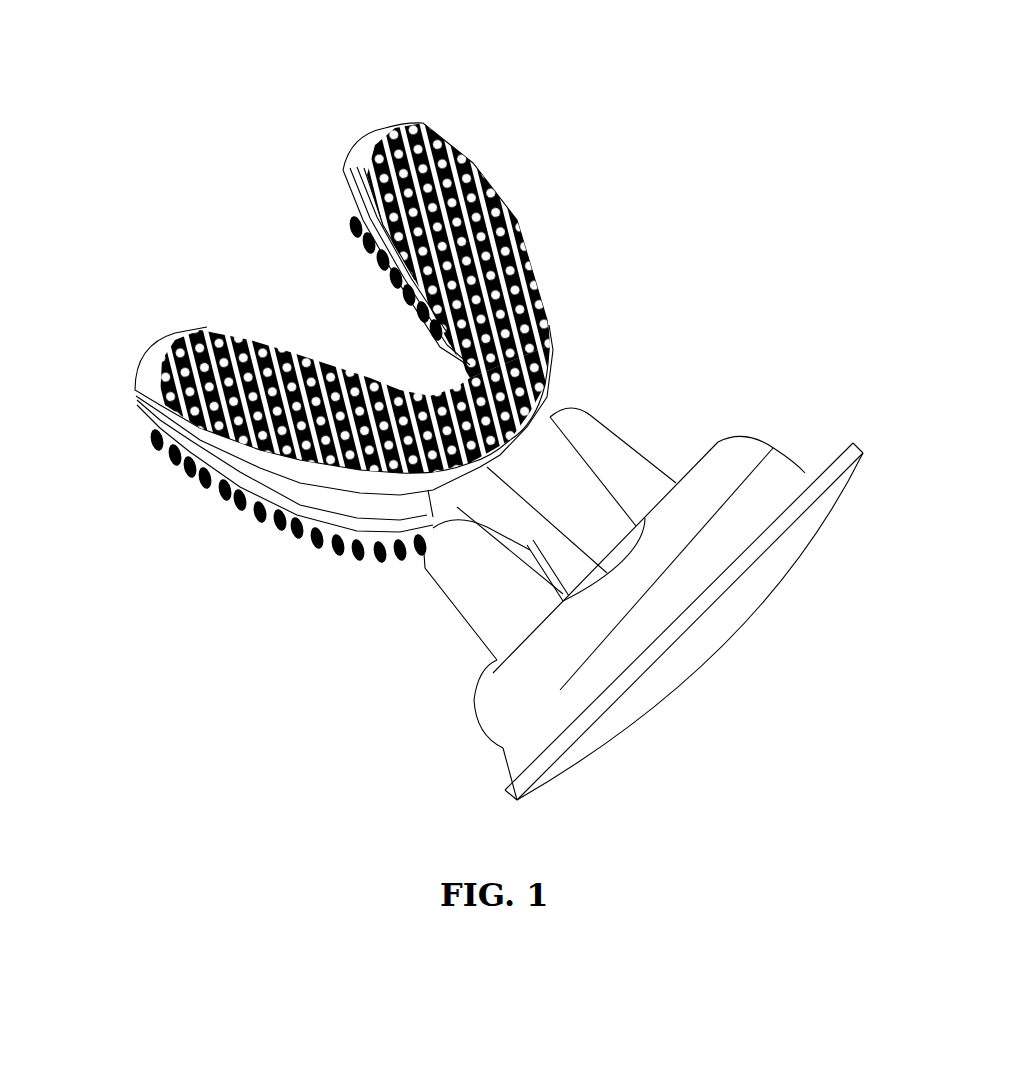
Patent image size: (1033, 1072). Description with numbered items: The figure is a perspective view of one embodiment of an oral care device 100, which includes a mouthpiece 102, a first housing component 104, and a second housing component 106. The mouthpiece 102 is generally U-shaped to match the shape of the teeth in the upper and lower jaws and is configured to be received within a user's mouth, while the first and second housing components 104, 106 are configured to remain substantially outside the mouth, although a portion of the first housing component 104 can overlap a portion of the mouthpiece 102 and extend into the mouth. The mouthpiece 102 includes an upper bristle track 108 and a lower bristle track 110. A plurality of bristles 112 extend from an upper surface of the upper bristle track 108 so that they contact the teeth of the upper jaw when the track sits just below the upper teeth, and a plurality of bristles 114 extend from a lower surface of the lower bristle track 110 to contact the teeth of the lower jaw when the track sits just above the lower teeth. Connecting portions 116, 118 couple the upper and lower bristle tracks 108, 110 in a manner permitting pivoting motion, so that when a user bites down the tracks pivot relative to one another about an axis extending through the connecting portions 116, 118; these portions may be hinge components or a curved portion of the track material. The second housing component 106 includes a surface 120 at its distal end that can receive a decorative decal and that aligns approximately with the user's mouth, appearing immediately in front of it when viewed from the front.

The oral care device 100 is at (808, 103).
The mouthpiece 102 is at (153, 640).
The first housing component 104 is at (667, 390).
The second housing component 106 is at (855, 415).
The upper bristle track 108 is at (185, 420).
The lower bristle track 110 is at (215, 466).
The bristles 112 is at (258, 363).
The bristles 114 is at (315, 540).
The connecting portion 116 is at (162, 355).
The connecting portion 118 is at (370, 160).
The surface 120 is at (773, 540).